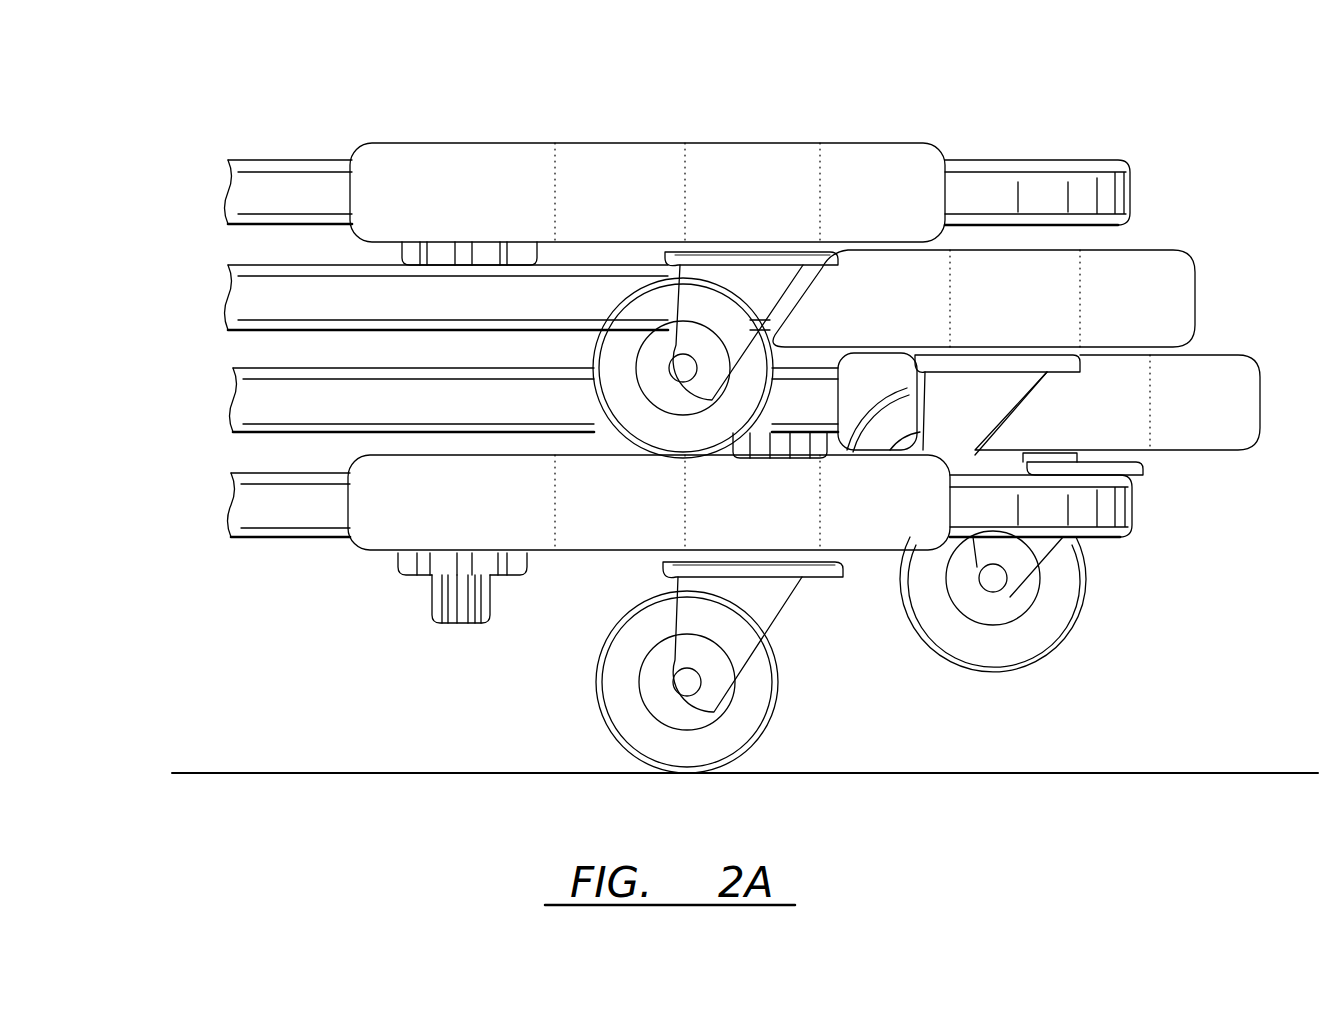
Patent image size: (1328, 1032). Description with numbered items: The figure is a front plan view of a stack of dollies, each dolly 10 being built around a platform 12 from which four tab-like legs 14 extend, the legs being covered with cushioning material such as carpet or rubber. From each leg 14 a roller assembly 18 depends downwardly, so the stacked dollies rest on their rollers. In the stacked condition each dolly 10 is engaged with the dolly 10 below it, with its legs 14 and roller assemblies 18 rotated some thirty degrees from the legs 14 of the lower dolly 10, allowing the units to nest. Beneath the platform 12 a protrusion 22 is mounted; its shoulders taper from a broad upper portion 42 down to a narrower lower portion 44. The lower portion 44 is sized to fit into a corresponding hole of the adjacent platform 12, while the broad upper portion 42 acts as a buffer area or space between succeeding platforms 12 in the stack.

The dolly 10 is at (1140, 178).
The platform 12 is at (240, 203).
The tab-like leg 14 is at (928, 160).
The roller assembly 18 is at (775, 713).
The protrusion 22 is at (438, 628).
The upper portion of protrusion 42 is at (398, 243).
The lower portion of protrusion 44 is at (490, 600).